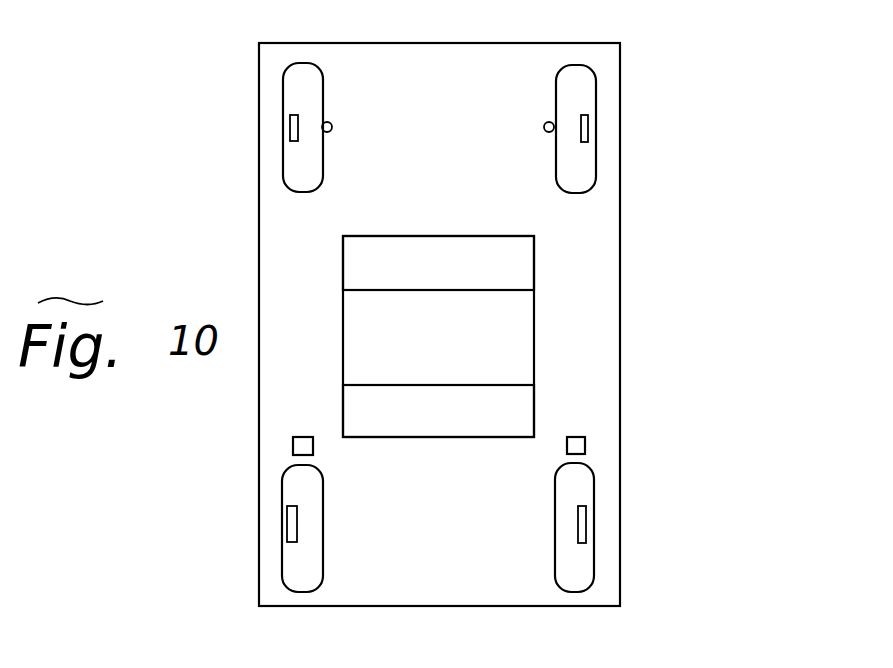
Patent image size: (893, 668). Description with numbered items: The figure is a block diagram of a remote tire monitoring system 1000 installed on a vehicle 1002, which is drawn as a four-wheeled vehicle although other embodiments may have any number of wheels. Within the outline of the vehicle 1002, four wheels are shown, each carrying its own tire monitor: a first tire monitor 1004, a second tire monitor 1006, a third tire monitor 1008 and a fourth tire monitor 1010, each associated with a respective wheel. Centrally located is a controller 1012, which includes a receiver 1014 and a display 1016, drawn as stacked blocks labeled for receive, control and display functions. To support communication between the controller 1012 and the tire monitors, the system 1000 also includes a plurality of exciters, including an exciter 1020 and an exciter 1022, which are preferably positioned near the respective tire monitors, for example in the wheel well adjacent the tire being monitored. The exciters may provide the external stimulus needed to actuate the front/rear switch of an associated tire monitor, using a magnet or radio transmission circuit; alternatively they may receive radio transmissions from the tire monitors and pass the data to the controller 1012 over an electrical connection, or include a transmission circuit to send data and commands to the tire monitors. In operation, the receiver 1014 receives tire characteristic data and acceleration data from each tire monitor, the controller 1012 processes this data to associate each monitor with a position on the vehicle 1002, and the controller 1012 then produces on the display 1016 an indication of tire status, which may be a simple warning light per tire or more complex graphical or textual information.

The remote tire monitoring system 1000 is at (160, 175).
The vehicle 1002 is at (620, 153).
The first tire monitor 1004 is at (297, 533).
The second tire monitor 1006 is at (298, 128).
The third tire monitor 1008 is at (581, 131).
The fourth tire monitor 1010 is at (578, 527).
The controller 1012 is at (534, 327).
The receiver 1014 is at (432, 236).
The display 1016 is at (457, 437).
The exciter 1020 is at (293, 446).
The exciter 1022 is at (585, 447).